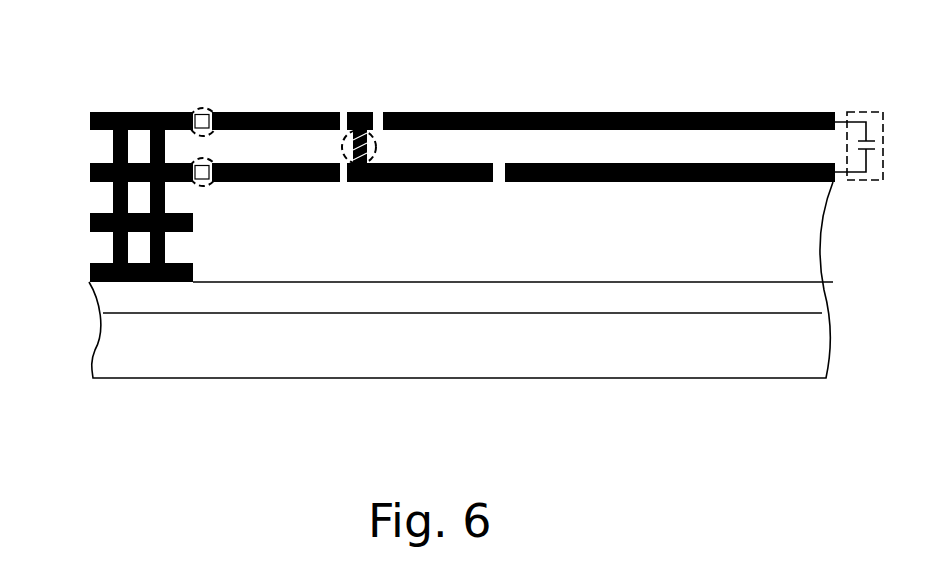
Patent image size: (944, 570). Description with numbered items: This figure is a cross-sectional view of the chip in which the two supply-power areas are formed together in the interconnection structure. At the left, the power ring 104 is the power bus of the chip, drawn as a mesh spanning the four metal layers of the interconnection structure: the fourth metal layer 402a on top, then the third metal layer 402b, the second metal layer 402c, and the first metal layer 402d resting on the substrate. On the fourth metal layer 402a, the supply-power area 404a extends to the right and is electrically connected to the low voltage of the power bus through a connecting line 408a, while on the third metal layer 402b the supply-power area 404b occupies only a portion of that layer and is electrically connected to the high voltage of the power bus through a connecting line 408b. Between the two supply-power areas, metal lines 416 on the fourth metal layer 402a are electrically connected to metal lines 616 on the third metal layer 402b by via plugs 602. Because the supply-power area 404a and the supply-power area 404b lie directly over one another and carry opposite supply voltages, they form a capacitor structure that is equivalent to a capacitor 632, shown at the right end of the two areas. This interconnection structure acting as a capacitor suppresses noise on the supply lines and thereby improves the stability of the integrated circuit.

The power ring 104 is at (180, 101).
The fourth metal layer 402a is at (90, 118).
The third metal layer 402b is at (90, 169).
The second metal layer 402c is at (90, 222).
The first metal layer 402d is at (90, 272).
The supply-power area 404a is at (275, 112).
The supply-power area 404b is at (307, 182).
The connecting line 408a is at (213, 108).
The connecting line 408b is at (209, 185).
The metal lines 416 is at (362, 109).
The via plugs 602 is at (374, 147).
The metal lines 616 is at (420, 182).
The capacitor 632 is at (877, 170).